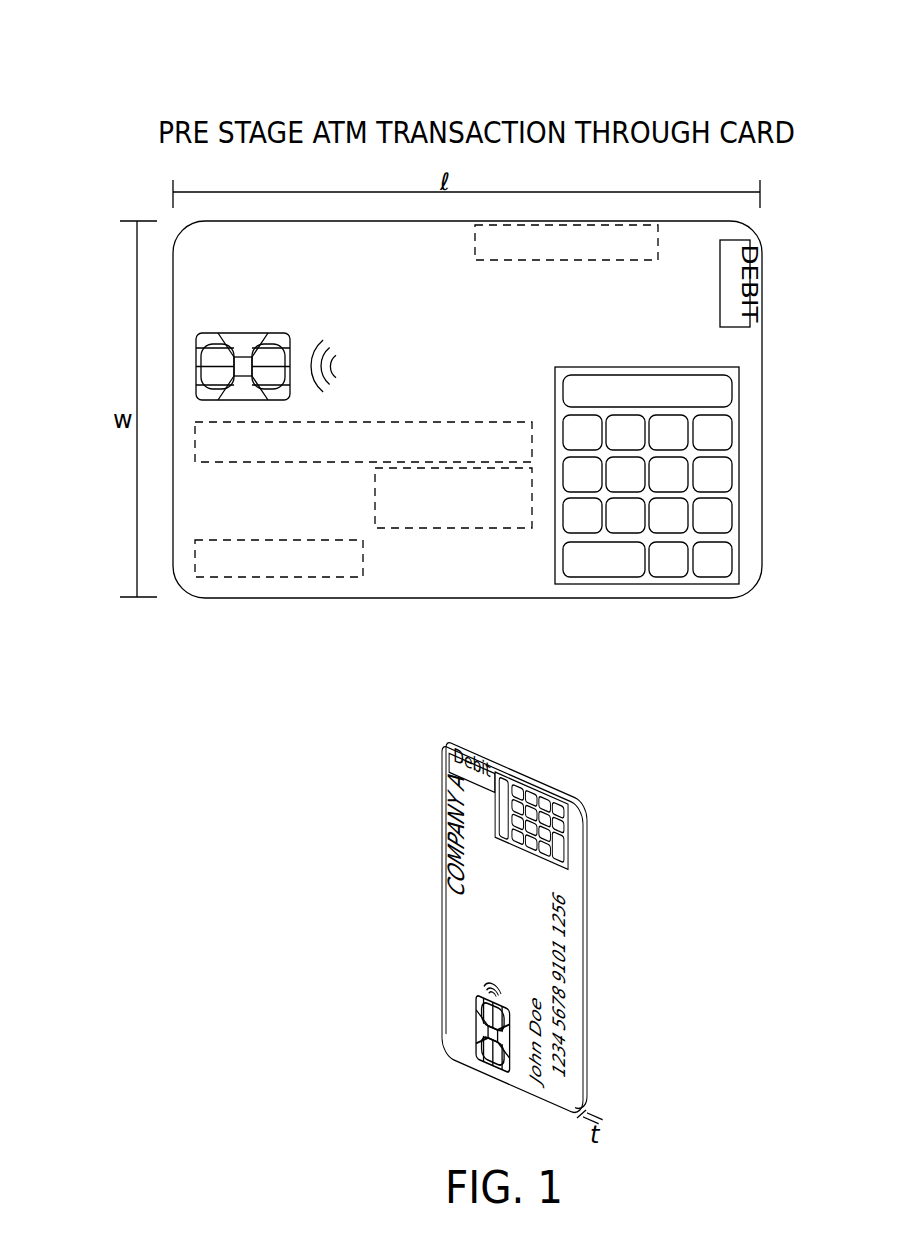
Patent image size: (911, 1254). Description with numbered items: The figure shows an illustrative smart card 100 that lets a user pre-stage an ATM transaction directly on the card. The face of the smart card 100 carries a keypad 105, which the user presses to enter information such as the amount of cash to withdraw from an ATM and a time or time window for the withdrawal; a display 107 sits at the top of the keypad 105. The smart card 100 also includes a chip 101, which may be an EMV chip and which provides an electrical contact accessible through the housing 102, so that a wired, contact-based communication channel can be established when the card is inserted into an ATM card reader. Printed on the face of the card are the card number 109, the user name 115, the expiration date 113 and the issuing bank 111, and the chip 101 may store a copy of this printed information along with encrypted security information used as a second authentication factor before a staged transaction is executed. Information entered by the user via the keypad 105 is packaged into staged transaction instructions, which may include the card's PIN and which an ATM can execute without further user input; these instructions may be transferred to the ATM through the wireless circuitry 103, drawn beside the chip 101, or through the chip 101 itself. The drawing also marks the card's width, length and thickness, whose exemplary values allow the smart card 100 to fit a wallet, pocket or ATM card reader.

The smart card 100 is at (108, 47).
The chip 101 is at (273, 332).
The housing 102 is at (470, 599).
The wireless circuitry 103 is at (333, 364).
The keypad 105 is at (687, 503).
The display 107 is at (732, 393).
The card number 109 is at (436, 422).
The issuing bank 111 is at (475, 247).
The expiration date 113 is at (375, 497).
The user name 115 is at (258, 578).